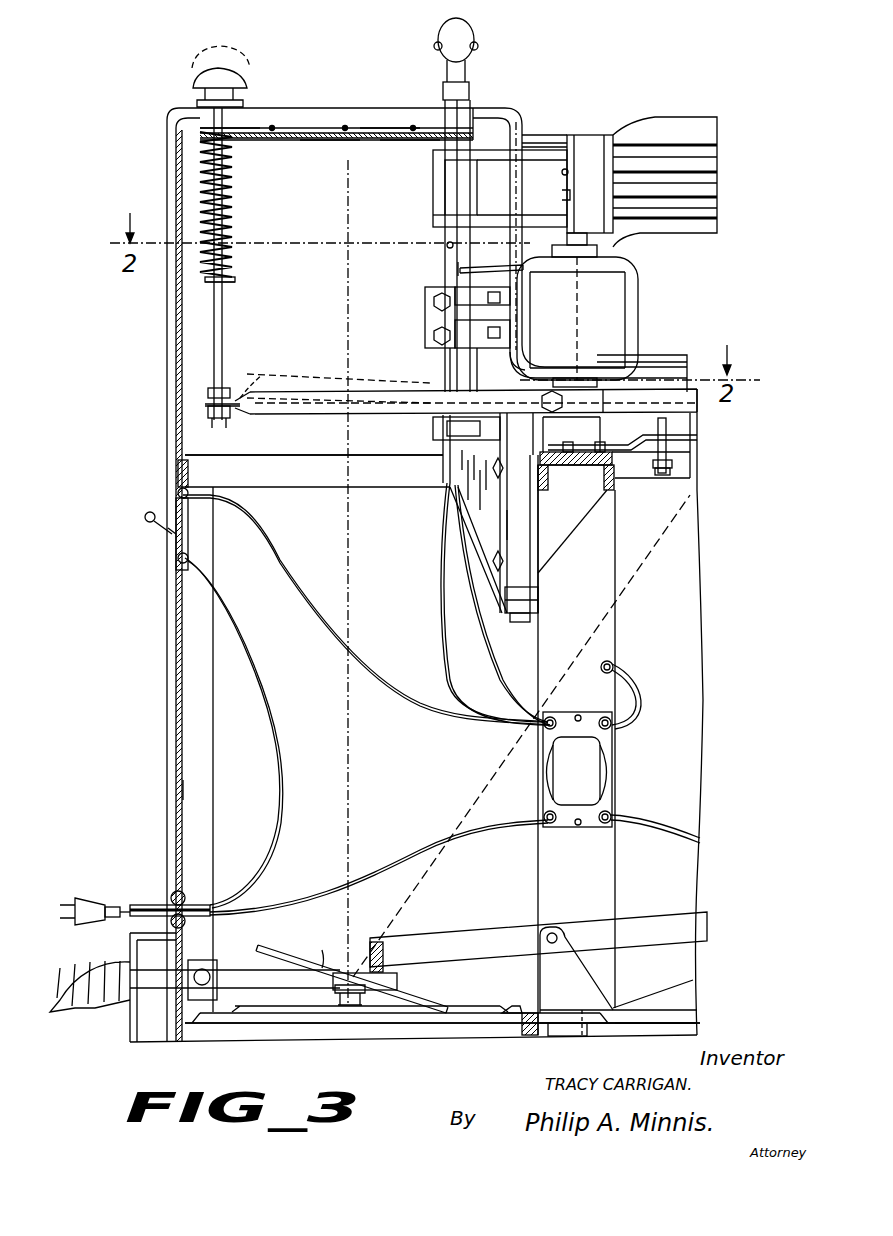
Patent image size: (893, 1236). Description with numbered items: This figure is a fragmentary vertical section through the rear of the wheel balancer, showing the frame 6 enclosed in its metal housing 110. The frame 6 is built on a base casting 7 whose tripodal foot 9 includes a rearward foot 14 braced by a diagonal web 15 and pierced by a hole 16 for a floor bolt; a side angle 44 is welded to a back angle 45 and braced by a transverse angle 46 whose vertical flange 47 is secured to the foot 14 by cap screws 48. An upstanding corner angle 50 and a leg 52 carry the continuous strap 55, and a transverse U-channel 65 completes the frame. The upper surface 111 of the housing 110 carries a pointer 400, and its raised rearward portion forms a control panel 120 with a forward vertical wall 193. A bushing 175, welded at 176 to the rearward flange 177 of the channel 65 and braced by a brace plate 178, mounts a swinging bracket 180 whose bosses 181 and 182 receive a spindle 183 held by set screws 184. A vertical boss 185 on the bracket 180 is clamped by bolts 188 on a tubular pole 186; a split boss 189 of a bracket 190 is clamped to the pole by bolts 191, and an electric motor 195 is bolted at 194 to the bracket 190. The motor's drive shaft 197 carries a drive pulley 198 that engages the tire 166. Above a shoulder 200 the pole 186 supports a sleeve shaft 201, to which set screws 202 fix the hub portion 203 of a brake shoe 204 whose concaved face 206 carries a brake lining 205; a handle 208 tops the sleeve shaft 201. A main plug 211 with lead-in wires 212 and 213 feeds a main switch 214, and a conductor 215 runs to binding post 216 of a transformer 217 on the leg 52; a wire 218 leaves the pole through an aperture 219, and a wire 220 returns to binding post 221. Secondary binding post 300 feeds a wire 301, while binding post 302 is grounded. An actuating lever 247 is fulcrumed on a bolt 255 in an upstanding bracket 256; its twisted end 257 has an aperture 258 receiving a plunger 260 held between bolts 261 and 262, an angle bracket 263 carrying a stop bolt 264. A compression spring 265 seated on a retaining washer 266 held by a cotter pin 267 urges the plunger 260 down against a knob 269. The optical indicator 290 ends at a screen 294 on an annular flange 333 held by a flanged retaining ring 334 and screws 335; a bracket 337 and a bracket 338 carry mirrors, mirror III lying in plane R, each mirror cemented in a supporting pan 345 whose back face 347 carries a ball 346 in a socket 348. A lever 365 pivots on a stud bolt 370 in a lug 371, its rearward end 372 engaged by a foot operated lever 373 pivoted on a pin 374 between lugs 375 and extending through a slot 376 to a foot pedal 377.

The frame 6 is at (193, 791).
The base casting 7 is at (700, 1012).
The tripodal foot 9 is at (680, 1038).
The foot 14 is at (588, 1037).
The diagonal web 15 is at (687, 995).
The hole 16 is at (574, 1037).
The angle 44 is at (445, 1040).
The back angle 45 is at (185, 1042).
The transverse angle 46 is at (530, 1008).
The vertical flange 47 is at (535, 1040).
The cap screws 48 is at (528, 1031).
The upstanding angle 50 is at (197, 695).
The leg 52 is at (585, 600).
The strap 55 is at (322, 478).
The transverse U-channel 65 is at (614, 451).
The housing 110 is at (173, 345).
The upper surface 111 is at (672, 357).
The control panel 120 is at (345, 99).
The tire 166 is at (712, 110).
The bushing 175 is at (525, 533).
The weld 176 is at (538, 470).
The rearward flange 177 is at (576, 482).
The brace plate 178 is at (580, 517).
The swinging bracket 180 is at (482, 505).
The boss 181 is at (516, 434).
The boss 182 is at (521, 597).
The spindle 183 is at (512, 622).
The set screws 184 is at (505, 458).
The vertical boss 185 is at (445, 435).
The tubular pole 186 is at (460, 364).
The bolts 188 is at (432, 413).
The split boss 189 is at (460, 290).
The bracket 190 is at (520, 352).
The bolts 191 is at (434, 338).
The vertical wall 193 is at (522, 135).
The bolts 194 is at (500, 333).
The electric motor 195 is at (612, 282).
The drive shaft 197 is at (590, 230).
The drive pulley 198 is at (580, 143).
The shoulder 200 is at (448, 243).
The sleeve shaft 201 is at (470, 92).
The set screws 202 is at (433, 165).
The hub portion 203 is at (433, 218).
The brake shoe 204 is at (533, 144).
The brake lining 205 is at (562, 196).
The concaved face 206 is at (562, 173).
The handle 208 is at (465, 30).
The main plug 211 is at (110, 887).
The lead-in wire 212 is at (310, 871).
The lead-in wire 213 is at (282, 785).
The main switch 214 is at (170, 535).
The conductor 215 is at (505, 721).
The binding post 216 is at (553, 713).
The transformer 217 is at (585, 772).
The wire 218 is at (500, 265).
The aperture 219 is at (458, 264).
The wire 220 is at (443, 651).
The binding post 221 is at (554, 828).
The actuating lever 247 is at (700, 405).
The bolt 255 is at (563, 402).
The upstanding bracket 256 is at (585, 440).
The end 257 is at (255, 385).
The aperture 258 is at (235, 415).
The plunger 260 is at (222, 320).
The bolt 261 is at (213, 386).
The bolt 262 is at (212, 418).
The angle bracket 263 is at (690, 463).
The stop bolt 264 is at (690, 448).
The compression spring 265 is at (232, 213).
The retaining washer 266 is at (235, 278).
The cotter pin 267 is at (225, 282).
The knob 269 is at (232, 75).
The optical indicator 290 is at (330, 140).
The screen 294 is at (388, 133).
The binding post 300 is at (605, 824).
The wire 301 is at (662, 832).
The binding post 302 is at (614, 728).
The annular flange 333 is at (428, 140).
The flanged retaining ring 334 is at (300, 128).
The screws 335 is at (282, 122).
The bracket 337 is at (692, 438).
The bracket 338 is at (380, 1018).
The supporting pan 345 is at (278, 933).
The ball 346 is at (335, 988).
The back face 347 is at (370, 994).
The socket 348 is at (312, 1012).
The lever 365 is at (582, 925).
The stud bolt 370 is at (577, 908).
The lug 371 is at (575, 987).
The rearward end 372 is at (366, 944).
The foot operated lever 373 is at (280, 985).
The pin 374 is at (204, 968).
The lugs 375 is at (215, 1003).
The slot 376 is at (135, 1031).
The foot pedal 377 is at (97, 963).
The pointer 400 is at (505, 109).
The plane R is at (632, 590).
The mirror III is at (311, 945).